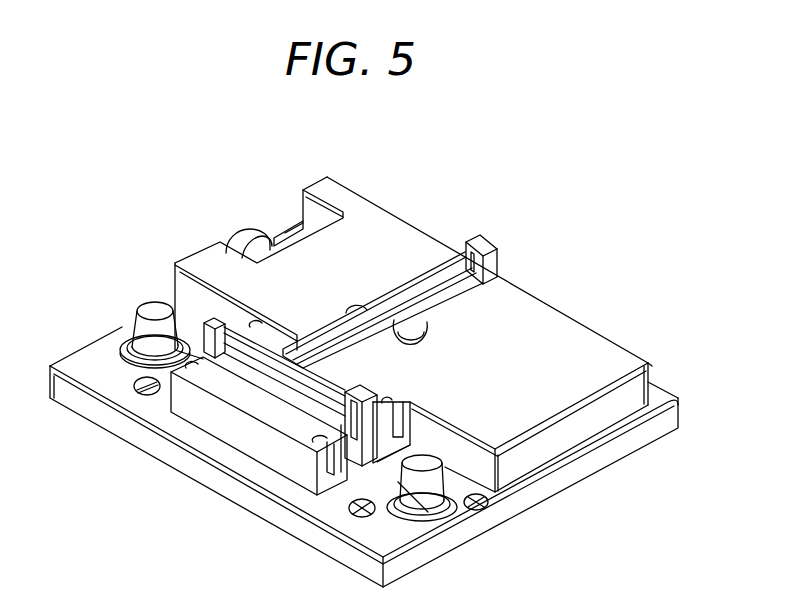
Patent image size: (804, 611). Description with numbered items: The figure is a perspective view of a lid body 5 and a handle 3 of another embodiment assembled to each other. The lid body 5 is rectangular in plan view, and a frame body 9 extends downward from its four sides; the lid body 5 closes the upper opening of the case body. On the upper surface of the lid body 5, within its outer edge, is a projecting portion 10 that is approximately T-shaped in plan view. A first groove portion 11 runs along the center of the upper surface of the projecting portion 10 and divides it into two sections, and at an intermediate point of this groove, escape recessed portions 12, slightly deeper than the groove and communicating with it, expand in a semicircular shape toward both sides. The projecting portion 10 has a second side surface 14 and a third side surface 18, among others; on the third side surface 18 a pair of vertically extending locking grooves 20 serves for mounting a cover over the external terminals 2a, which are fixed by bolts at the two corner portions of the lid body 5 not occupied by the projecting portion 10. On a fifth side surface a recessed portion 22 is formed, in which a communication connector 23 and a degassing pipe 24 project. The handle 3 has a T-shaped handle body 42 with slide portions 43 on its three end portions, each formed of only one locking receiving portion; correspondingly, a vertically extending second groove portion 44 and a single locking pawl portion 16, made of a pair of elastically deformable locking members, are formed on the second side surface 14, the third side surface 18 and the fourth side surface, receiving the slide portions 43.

The handle 3 is at (483, 232).
The lid body 5 is at (667, 472).
The frame body 9 is at (595, 470).
The projecting portion 10 is at (572, 330).
The first groove portion 11 is at (448, 297).
The escape recessed portions 12 is at (400, 340).
The second side surface 14 is at (650, 370).
The locking pawl portion 16 is at (410, 470).
The third side surface 18 is at (335, 448).
The locking grooves 20 is at (386, 400).
The recessed portion 22 is at (303, 188).
The communication connector 23 is at (300, 225).
The degassing pipe 24 is at (247, 230).
The handle body 42 is at (440, 265).
The slide portions 43 is at (497, 255).
The second groove portion 44 is at (362, 516).
The external terminals 2a is at (440, 492).